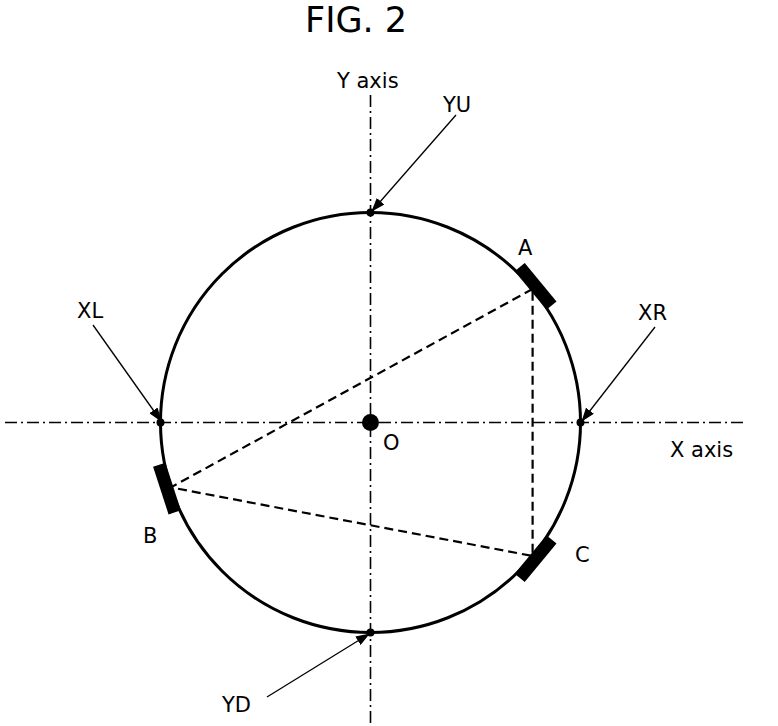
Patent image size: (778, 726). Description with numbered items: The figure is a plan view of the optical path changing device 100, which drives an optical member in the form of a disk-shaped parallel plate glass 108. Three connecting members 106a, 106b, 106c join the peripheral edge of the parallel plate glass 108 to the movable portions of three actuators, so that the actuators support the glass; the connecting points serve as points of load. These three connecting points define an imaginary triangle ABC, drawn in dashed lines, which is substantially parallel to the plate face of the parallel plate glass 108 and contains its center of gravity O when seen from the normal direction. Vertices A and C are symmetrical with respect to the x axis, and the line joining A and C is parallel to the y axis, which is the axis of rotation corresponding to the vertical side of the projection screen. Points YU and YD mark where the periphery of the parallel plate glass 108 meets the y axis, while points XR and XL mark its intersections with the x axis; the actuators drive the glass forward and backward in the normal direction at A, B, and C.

The optical path changing device 100 is at (672, 714).
The parallel plate glass 108 is at (211, 293).
The connecting member 106a is at (546, 281).
The connecting member 106b is at (162, 490).
The connecting member 106c is at (542, 566).